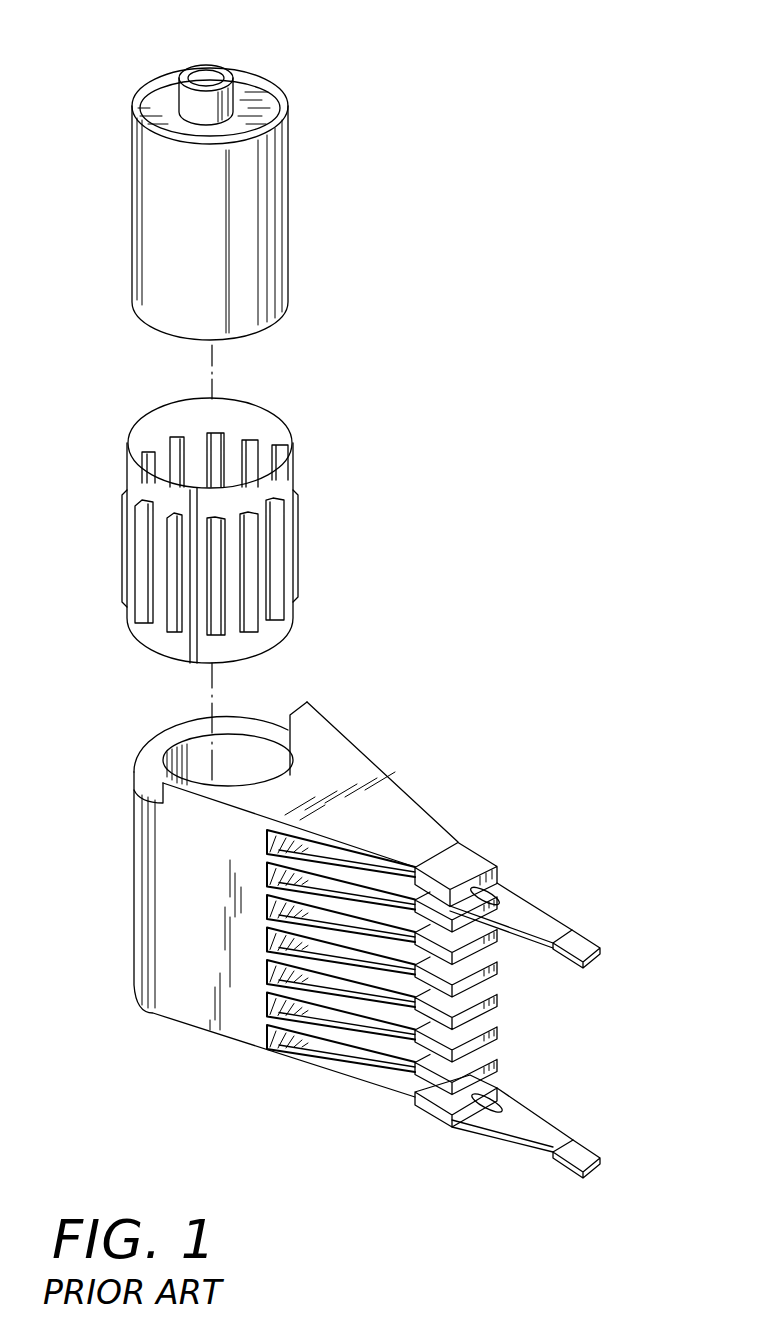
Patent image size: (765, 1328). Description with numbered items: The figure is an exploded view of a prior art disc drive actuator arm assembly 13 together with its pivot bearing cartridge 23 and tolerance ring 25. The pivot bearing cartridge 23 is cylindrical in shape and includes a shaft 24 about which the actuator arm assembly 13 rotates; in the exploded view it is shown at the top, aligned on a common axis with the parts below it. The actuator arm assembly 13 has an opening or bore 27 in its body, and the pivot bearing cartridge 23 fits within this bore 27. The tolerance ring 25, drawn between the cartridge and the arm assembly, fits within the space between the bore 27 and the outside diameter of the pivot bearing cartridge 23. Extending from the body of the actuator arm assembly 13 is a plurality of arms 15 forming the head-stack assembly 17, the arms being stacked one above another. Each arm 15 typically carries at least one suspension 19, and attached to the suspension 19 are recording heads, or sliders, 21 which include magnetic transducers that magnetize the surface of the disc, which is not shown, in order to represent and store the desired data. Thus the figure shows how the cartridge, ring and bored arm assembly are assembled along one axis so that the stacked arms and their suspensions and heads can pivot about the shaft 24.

The actuator arm assembly 13 is at (188, 1010).
The arm 15 is at (388, 797).
The head-stack assembly 17 is at (338, 1073).
The suspension 19 is at (520, 903).
The recording head (slider) 21 is at (601, 948).
The pivot bearing cartridge 23 is at (282, 227).
The shaft 24 is at (210, 64).
The tolerance ring 25 is at (297, 541).
The bore 27 is at (290, 728).